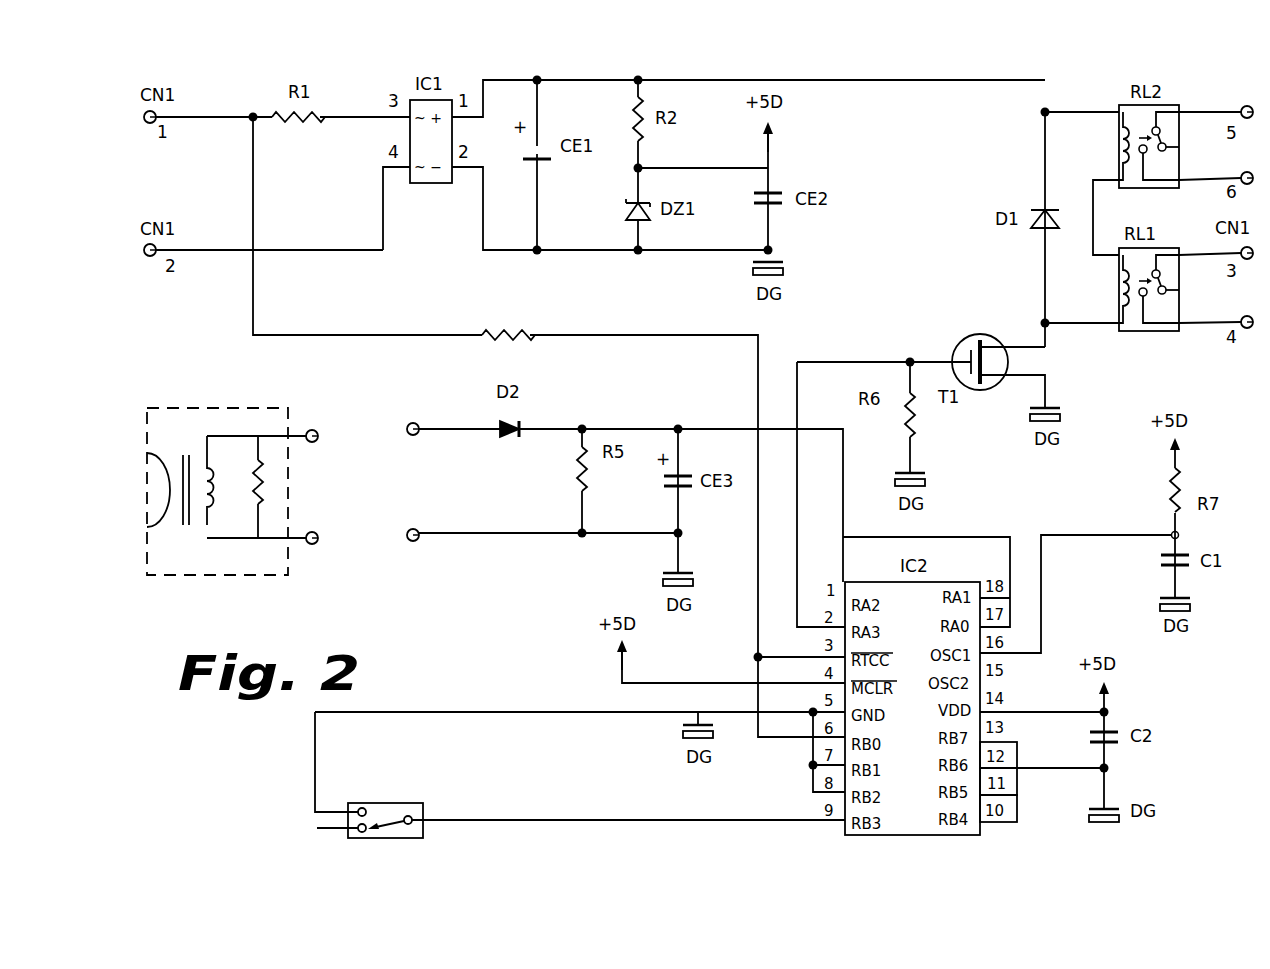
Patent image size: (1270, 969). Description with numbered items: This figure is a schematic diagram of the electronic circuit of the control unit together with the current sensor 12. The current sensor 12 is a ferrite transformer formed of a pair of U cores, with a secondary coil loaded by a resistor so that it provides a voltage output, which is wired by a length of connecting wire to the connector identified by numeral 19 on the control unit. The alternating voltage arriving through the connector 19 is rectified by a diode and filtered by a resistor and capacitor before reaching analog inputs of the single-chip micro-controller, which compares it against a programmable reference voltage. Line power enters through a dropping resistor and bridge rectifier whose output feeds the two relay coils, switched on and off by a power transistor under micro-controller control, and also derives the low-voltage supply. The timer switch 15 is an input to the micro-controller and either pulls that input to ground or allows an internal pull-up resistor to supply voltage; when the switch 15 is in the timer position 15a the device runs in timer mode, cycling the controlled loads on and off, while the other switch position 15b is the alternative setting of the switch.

The current sensor 12 is at (163, 400).
The connector CN2 19 is at (392, 460).
The timer switch 15 is at (305, 789).
The timer position 15a is at (308, 804).
The second switch terminal 15b is at (315, 837).